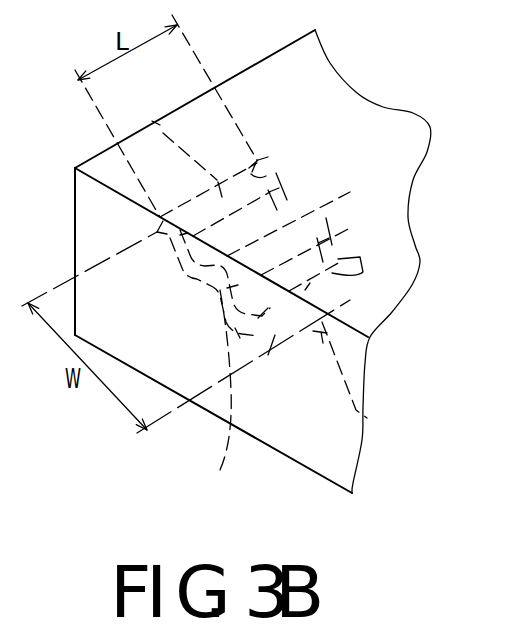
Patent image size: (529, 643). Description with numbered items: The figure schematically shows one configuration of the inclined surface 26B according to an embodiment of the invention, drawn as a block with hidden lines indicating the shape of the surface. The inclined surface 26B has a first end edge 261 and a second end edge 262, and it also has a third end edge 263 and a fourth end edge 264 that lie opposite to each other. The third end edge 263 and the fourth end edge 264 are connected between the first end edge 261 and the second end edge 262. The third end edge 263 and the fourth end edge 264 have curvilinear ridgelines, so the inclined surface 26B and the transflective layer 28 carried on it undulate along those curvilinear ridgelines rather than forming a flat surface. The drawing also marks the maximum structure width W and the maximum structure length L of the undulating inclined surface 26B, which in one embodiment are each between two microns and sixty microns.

The transflective layer 28 is at (291, 241).
The inclined surface 26B is at (356, 306).
The first end edge 261 is at (156, 128).
The second end edge 262 is at (378, 425).
The third end edge 263 is at (220, 470).
The fourth end edge 264 is at (340, 258).